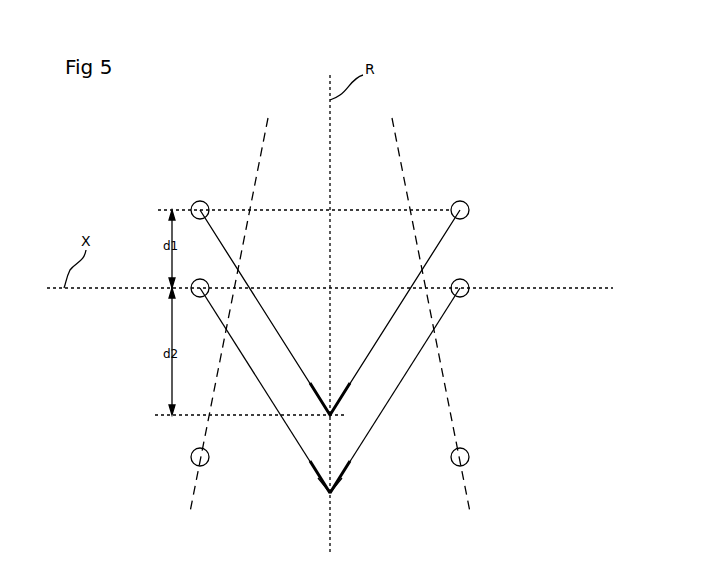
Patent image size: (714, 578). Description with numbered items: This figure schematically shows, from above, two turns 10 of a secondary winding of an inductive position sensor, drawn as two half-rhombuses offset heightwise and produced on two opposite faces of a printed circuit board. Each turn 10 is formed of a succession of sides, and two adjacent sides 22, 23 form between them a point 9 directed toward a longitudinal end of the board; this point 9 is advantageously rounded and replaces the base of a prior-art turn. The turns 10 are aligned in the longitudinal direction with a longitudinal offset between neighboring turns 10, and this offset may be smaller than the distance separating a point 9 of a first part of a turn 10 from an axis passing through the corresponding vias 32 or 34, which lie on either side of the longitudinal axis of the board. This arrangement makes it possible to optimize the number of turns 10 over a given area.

The point 9 is at (312, 410).
The turn 10 is at (392, 310).
The side 22 is at (410, 387).
The side 23 is at (258, 376).
The via 32 is at (468, 453).
The via 34 is at (192, 453).